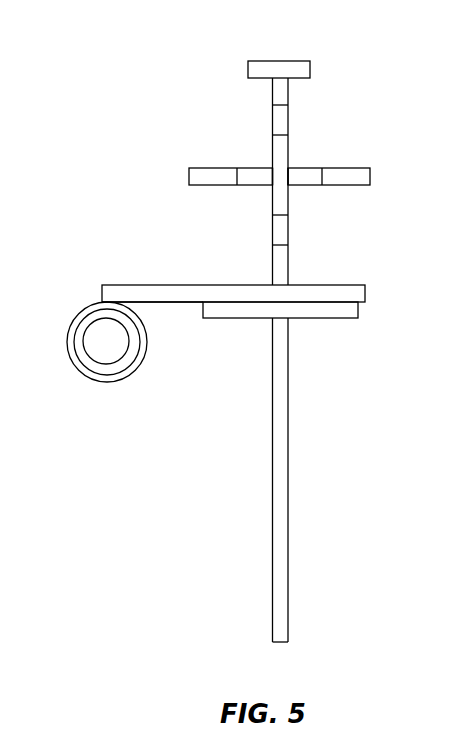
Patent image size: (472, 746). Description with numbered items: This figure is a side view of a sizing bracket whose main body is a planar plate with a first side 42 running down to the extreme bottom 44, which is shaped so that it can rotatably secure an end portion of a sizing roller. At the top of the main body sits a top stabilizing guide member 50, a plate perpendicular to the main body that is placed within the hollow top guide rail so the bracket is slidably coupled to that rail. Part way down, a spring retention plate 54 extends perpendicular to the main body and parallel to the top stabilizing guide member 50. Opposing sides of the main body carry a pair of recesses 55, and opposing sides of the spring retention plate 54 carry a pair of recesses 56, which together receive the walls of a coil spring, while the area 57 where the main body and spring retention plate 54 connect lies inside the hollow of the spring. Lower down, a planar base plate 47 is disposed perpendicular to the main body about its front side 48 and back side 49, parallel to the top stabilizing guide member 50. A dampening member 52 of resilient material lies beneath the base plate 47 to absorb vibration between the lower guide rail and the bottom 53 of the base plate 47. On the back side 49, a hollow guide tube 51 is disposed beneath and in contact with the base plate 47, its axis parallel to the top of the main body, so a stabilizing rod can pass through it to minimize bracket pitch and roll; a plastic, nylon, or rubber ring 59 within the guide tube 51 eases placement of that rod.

The first side 42 is at (274, 360).
The bottom 44 is at (288, 622).
The planar base plate 47 is at (357, 297).
The front side 48 is at (288, 443).
The back side 49 is at (270, 470).
The top stabilizing guide member 50 is at (295, 67).
The hollow guide tube 51 is at (75, 368).
The dampening member 52 is at (350, 308).
The bottom of base plate 53 is at (160, 303).
The spring retention plate 54 is at (372, 178).
The recesses 55 is at (280, 122).
The recesses 56 is at (250, 165).
The area 57 is at (280, 178).
The ring 59 is at (88, 330).